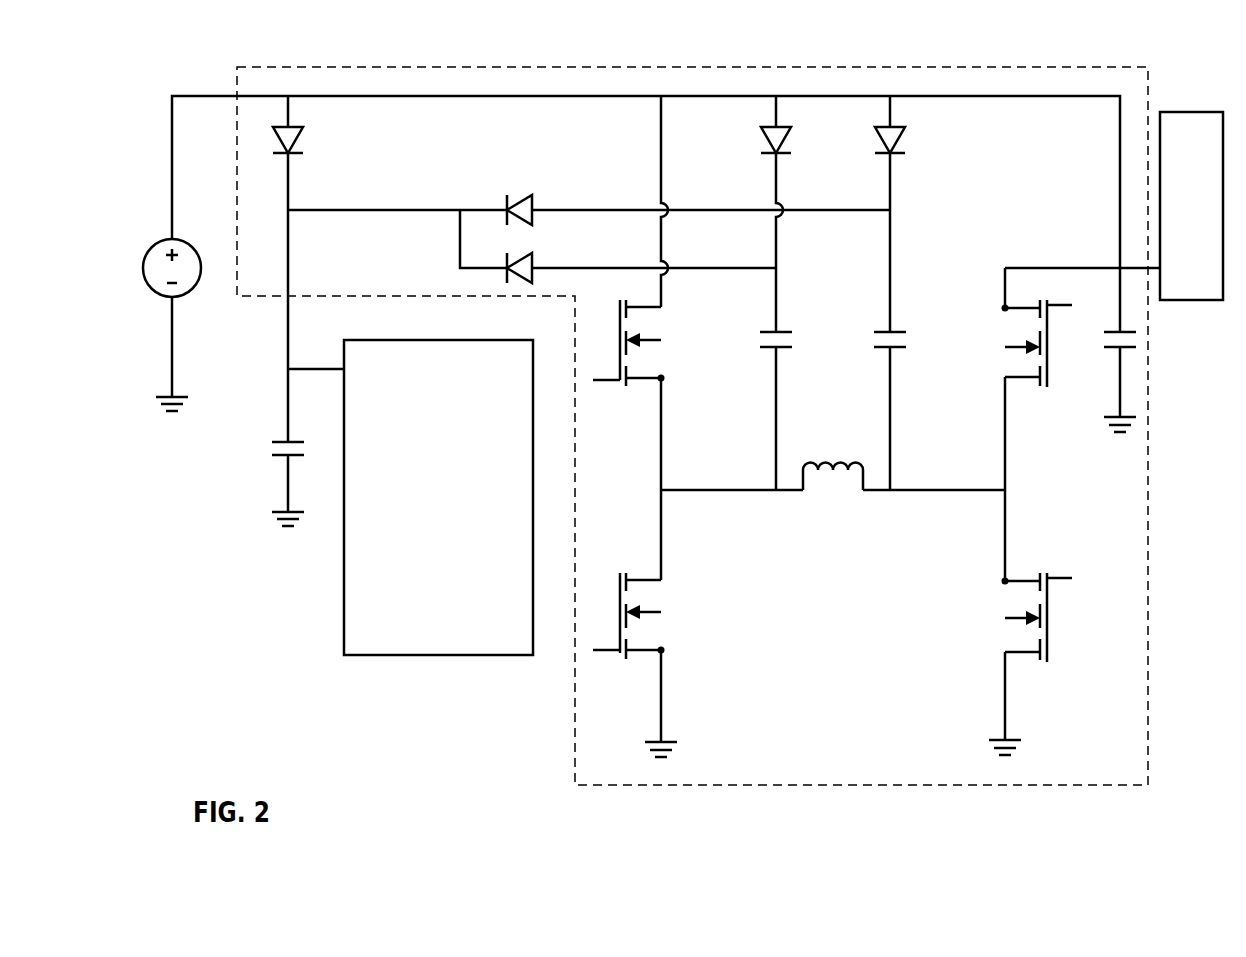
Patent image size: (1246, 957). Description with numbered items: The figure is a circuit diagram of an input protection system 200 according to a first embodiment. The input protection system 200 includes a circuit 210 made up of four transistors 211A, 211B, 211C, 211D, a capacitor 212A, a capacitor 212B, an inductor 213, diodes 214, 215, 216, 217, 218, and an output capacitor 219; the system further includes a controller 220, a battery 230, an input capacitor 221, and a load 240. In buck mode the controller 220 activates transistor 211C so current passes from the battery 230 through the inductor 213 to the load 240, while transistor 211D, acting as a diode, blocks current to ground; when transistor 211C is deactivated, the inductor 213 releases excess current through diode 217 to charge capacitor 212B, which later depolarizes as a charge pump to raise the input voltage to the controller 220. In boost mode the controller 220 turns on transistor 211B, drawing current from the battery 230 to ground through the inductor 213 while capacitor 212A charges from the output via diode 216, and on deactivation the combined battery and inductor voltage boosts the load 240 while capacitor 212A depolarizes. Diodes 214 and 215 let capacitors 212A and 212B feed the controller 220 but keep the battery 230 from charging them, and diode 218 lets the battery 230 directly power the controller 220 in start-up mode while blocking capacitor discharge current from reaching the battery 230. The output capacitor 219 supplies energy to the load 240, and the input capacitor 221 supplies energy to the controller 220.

The input protection system 200 is at (1168, 72).
The circuit 210 is at (900, 67).
The transistor 211A is at (1020, 308).
The transistor 211B is at (1020, 581).
The transistor 211C is at (655, 305).
The transistor 211D is at (655, 578).
The capacitor 212A is at (897, 332).
The capacitor 212B is at (783, 332).
The inductor 213 is at (812, 470).
The diode 214 is at (530, 199).
The diode 215 is at (530, 257).
The diode 216 is at (897, 127).
The diode 217 is at (783, 127).
The diode 218 is at (295, 127).
The output capacitor 219 is at (1128, 332).
The controller 220 is at (373, 340).
The input capacitor 221 is at (283, 440).
The battery 230 is at (185, 240).
The load 240 is at (1178, 112).